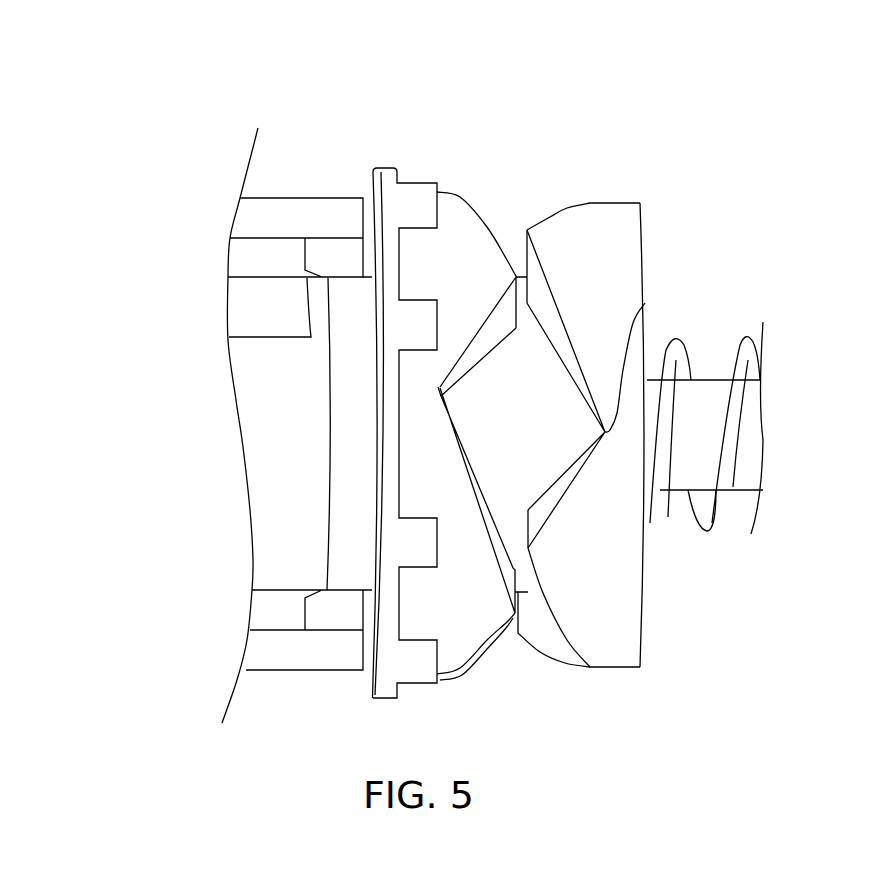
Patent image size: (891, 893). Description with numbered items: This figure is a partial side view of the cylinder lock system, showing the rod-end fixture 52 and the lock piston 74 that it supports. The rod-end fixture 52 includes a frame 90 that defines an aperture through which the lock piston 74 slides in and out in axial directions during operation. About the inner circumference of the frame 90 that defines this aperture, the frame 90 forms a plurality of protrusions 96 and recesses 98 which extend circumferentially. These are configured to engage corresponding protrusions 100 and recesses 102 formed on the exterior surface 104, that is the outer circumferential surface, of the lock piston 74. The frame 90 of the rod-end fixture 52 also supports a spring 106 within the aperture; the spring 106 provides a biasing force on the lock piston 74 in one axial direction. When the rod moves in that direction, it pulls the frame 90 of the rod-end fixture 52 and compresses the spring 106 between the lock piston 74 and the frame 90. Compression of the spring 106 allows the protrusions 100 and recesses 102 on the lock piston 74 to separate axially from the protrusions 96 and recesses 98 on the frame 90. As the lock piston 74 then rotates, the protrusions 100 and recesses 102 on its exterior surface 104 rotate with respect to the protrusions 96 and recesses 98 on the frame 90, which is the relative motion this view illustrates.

The rod-end fixture 52 is at (275, 82).
The lock piston 74 is at (90, 234).
The frame 90 is at (387, 183).
The protrusions 96 is at (507, 278).
The recesses 98 is at (437, 388).
The protrusions 100 is at (527, 230).
The recesses 102 is at (645, 303).
The exterior surface 104 is at (255, 394).
The spring 106 is at (733, 417).